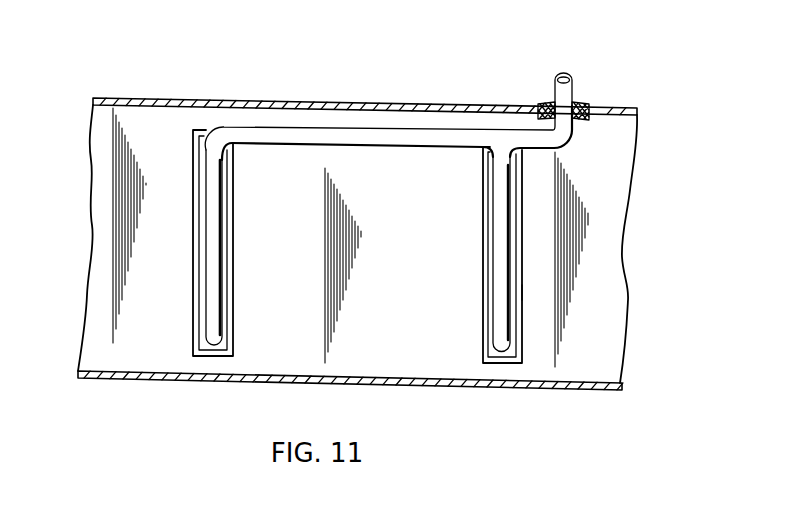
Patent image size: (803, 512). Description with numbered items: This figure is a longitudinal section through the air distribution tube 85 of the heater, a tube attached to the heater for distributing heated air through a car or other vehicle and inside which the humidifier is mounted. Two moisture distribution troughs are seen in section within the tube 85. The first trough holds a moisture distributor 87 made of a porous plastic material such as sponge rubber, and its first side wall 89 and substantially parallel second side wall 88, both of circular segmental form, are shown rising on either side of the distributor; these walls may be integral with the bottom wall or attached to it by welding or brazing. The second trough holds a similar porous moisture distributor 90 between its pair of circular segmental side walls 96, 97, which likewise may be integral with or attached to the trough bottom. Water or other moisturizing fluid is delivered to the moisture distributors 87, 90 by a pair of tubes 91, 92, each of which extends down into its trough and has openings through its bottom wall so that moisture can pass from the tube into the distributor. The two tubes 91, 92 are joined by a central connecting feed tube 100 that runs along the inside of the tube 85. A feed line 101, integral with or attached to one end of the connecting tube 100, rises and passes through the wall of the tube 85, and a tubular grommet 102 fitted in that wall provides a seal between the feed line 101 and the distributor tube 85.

The tube 85 is at (93, 374).
The moisture distributor 87 is at (228, 181).
The second side wall 88 is at (236, 221).
The first side wall 89 is at (193, 232).
The moisture distributor 90 is at (490, 250).
The tube 91 is at (213, 284).
The tube 92 is at (503, 210).
The side wall 96 is at (485, 297).
The side wall 97 is at (524, 290).
The central connecting feed tube 100 is at (365, 137).
The feed line 101 is at (571, 77).
The tubular grommet 102 is at (585, 100).